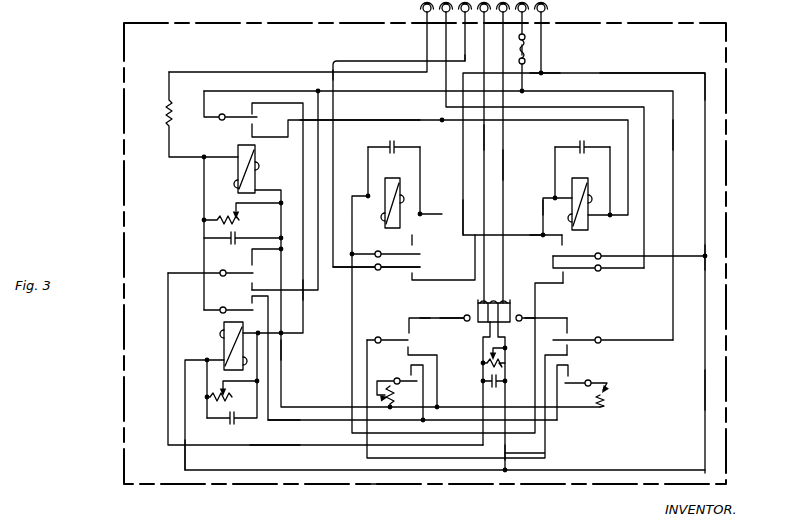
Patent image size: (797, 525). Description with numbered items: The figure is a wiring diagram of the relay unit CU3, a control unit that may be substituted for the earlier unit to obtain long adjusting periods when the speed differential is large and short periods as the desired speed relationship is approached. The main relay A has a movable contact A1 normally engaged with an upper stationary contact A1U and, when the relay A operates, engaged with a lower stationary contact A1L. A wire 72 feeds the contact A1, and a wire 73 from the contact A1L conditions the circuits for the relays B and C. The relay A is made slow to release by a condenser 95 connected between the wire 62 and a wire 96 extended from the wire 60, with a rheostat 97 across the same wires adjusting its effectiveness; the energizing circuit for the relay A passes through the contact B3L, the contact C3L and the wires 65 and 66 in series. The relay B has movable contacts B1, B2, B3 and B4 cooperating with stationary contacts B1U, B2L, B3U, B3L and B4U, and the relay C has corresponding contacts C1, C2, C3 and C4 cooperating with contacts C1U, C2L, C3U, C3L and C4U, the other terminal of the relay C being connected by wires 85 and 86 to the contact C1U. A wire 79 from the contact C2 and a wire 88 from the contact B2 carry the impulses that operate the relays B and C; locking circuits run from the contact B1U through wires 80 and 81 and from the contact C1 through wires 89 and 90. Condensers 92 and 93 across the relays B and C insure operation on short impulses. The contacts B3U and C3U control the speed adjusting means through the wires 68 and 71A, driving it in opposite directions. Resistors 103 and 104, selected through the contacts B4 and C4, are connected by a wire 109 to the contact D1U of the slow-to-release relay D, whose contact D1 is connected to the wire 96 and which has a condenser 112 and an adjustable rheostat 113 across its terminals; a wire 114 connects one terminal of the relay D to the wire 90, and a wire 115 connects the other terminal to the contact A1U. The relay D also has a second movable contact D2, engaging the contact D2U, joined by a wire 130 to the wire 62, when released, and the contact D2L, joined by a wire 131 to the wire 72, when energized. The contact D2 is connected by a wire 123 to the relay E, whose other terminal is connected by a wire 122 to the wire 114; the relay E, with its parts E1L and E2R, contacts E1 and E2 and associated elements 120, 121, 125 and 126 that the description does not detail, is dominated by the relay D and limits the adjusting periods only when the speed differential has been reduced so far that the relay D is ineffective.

The wire 60 is at (168, 85).
The wire 72 is at (220, 91).
The movable contact A1 is at (222, 118).
The upper stationary contact A1U is at (249, 110).
The lower stationary contact A1L is at (251, 128).
The main relay A is at (243, 163).
The wire 131 is at (318, 157).
The wire 88 is at (340, 61).
The wire 79 is at (465, 52).
The wire 81 is at (527, 40).
The wire 66 is at (541, 78).
The wire 90 is at (628, 73).
The wire 65 is at (673, 132).
The wire 73 is at (338, 120).
The wire 68 is at (484, 137).
The wire 71A is at (503, 164).
The wire 96 is at (204, 207).
The rheostat 97 is at (241, 215).
The condenser 95 is at (229, 238).
The stationary contact D2U is at (243, 261).
The second movable contact D2 is at (222, 270).
The stationary contact D2L is at (242, 285).
The wire 130 is at (325, 355).
The movable contact D1 is at (222, 309).
The stationary contact D1U is at (260, 307).
The wire 115 is at (303, 292).
The wire 62 is at (282, 348).
The relay D is at (224, 350).
The adjustable rheostat 113 is at (210, 407).
The condenser 112 is at (228, 422).
The wire 109 is at (283, 420).
The wire 123 is at (277, 445).
The wire 114 is at (185, 462).
The condenser 92 is at (390, 147).
The relay B is at (387, 178).
The wire 80 is at (463, 225).
The movable contact B1 is at (388, 254).
The stationary contact B1U is at (413, 238).
The movable contact B2 is at (393, 270).
The stationary contact B2L is at (415, 276).
The movable contact B3 is at (386, 340).
The upper stationary contact B3U is at (414, 332).
The lower stationary contact B3L is at (413, 346).
The stationary contact B4U is at (410, 372).
The movable contact B4 is at (412, 386).
The resistor 103 is at (386, 400).
The relay E is at (478, 325).
The relay E left coil section E1L is at (470, 290).
The relay E right coil section E2R is at (506, 292).
The conductor 120 is at (411, 310).
The relay E movable contact E1 is at (462, 317).
The relay E movable contact E2 is at (524, 310).
The conductor 121 is at (535, 319).
The resistor 126 is at (503, 355).
The capacitor 125 is at (498, 386).
The wire 122 is at (545, 455).
The condenser 93 is at (582, 147).
The relay C is at (572, 178).
The wire 85 is at (543, 208).
The wire 86 is at (535, 236).
The stationary contact C1U is at (558, 246).
The movable contact C1 is at (580, 256).
The wire 89 is at (690, 260).
The movable contact C2 is at (588, 274).
The stationary contact C2L is at (566, 283).
The upper contact C3U is at (569, 328).
The movable contact C3 is at (596, 340).
The lower contact C3L is at (572, 354).
The stationary contact C4U is at (572, 371).
The movable contact C4 is at (572, 385).
The resistor 104 is at (605, 404).
The relay unit CU3 is at (348, 492).